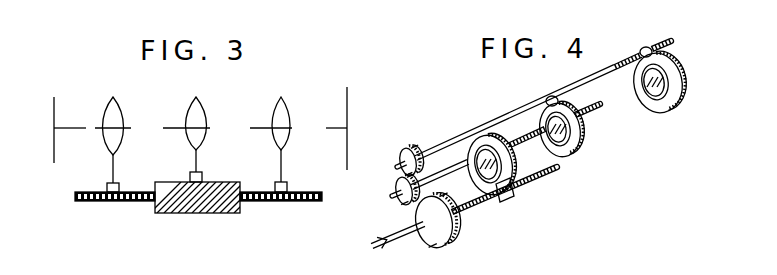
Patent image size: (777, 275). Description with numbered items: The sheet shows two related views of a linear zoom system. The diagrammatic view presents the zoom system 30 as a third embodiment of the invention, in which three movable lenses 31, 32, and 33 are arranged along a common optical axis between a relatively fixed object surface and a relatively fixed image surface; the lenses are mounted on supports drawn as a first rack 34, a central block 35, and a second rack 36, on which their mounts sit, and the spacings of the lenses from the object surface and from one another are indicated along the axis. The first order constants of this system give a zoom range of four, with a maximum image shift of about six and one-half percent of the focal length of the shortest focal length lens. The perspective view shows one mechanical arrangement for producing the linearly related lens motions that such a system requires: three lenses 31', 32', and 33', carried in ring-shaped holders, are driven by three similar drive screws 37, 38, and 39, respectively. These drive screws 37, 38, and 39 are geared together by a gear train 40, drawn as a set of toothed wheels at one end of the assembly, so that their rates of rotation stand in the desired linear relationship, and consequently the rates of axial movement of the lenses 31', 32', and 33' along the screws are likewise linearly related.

In FIG. 3, the optical system 30 is at (268, 67).
In FIG. 3, the movable lens 31 is at (104, 138).
In FIG. 3, the movable lens 32 is at (184, 133).
In FIG. 3, the movable lens 33 is at (258, 138).
In FIG. 3, the rack 34 is at (97, 192).
In FIG. 3, the block 35 is at (178, 215).
In FIG. 3, the rack 36 is at (311, 201).
In FIG. 4, the lens 31' is at (483, 154).
In FIG. 4, the lens 32' is at (551, 120).
In FIG. 4, the lens 33' is at (662, 98).
In FIG. 4, the drive screw 37 is at (543, 179).
In FIG. 4, the drive screw 38 is at (591, 110).
In FIG. 4, the drive screw 39 is at (618, 60).
In FIG. 4, the gear train 40 is at (392, 214).